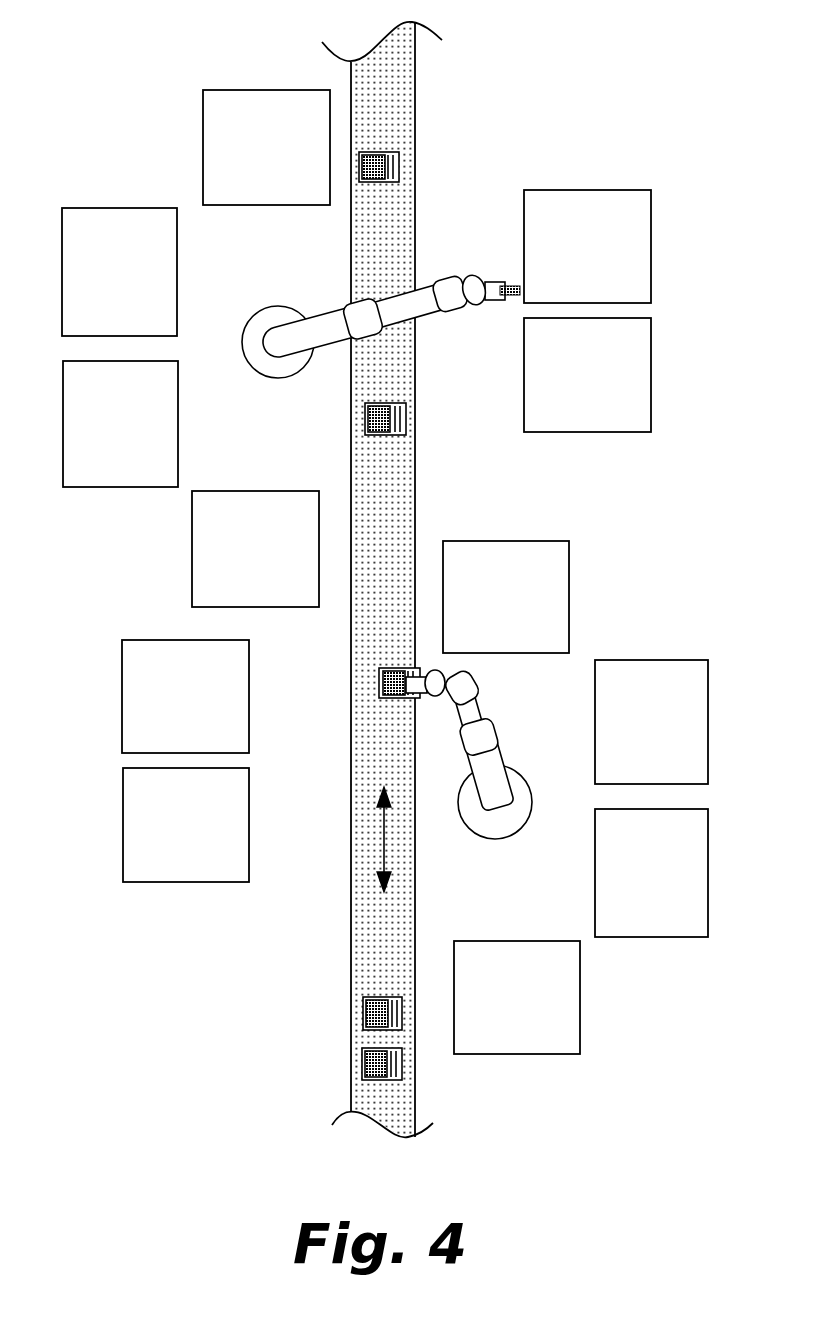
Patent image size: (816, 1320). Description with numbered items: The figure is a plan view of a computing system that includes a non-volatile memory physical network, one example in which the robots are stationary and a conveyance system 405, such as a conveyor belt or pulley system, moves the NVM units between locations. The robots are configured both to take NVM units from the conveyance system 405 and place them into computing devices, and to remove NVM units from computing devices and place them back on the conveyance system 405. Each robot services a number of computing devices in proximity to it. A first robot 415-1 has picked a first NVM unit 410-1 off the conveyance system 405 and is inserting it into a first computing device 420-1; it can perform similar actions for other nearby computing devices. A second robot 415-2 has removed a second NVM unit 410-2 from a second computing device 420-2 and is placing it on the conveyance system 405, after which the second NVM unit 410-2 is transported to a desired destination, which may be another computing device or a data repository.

The conveyance system 405 is at (360, 940).
The first NVM unit 410-1 is at (512, 284).
The second NVM unit 410-2 is at (380, 682).
The first robot 415-1 is at (274, 313).
The second robot 415-2 is at (502, 823).
The first computing device 420-1 is at (616, 268).
The second computing device 420-2 is at (683, 737).